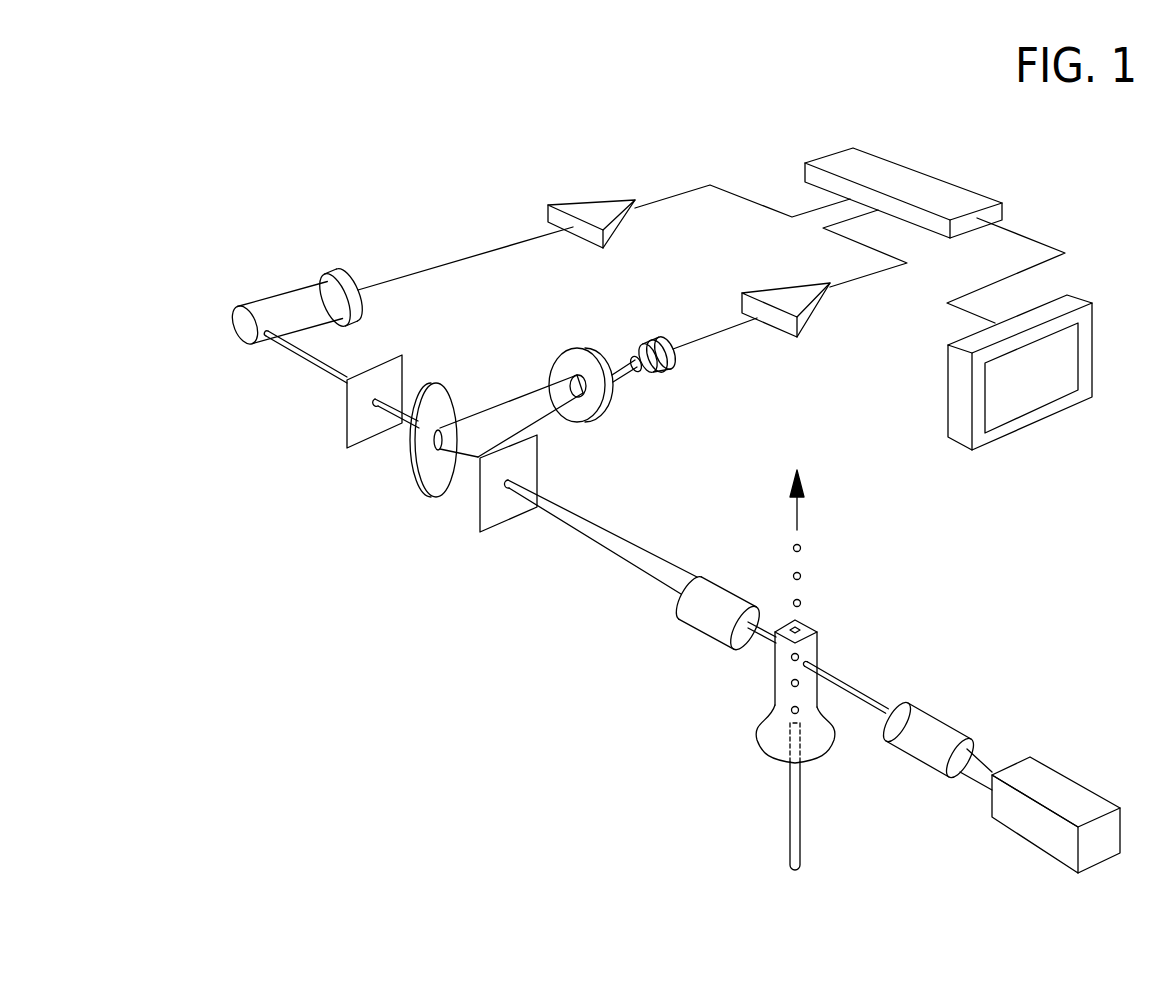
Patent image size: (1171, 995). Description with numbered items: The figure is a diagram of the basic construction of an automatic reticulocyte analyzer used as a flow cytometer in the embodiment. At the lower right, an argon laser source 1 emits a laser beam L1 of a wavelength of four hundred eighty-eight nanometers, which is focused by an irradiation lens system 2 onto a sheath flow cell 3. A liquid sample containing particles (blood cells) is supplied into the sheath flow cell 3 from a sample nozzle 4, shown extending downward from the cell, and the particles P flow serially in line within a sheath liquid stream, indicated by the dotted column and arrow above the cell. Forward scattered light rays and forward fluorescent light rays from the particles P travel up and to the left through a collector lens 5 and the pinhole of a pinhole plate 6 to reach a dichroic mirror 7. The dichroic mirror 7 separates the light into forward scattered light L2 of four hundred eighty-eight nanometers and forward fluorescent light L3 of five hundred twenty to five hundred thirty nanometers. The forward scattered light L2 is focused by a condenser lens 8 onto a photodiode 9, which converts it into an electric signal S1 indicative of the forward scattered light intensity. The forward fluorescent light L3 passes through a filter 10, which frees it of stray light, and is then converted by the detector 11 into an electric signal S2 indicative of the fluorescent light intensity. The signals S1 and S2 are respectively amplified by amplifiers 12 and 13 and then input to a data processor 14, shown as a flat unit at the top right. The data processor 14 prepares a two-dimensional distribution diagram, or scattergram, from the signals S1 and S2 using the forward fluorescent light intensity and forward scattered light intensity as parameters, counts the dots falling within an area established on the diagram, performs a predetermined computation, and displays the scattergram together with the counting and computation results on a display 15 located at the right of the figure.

The argon laser source 1 is at (1067, 777).
The irradiation lens system 2 is at (930, 720).
The sheath flow cell 3 is at (810, 643).
The sample nozzle 4 is at (800, 842).
The collector lens 5 is at (707, 617).
The pinhole plate 6 is at (500, 510).
The dichroic mirror 7 is at (433, 487).
The condenser lens 8 is at (612, 407).
The photodiode 9 is at (673, 370).
The filter 10 is at (355, 420).
The photodetector 11 is at (285, 300).
The amplifier 12 is at (810, 313).
The amplifier 13 is at (590, 210).
The data processor 14 is at (920, 182).
The display 15 is at (1072, 350).
The laser beam L1 is at (988, 763).
The forward scattered light L2 is at (500, 407).
The forward fluorescent light L3 is at (407, 420).
The electric signal S1 is at (690, 337).
The electric signal S2 is at (447, 263).
The particles (blood cells) P is at (802, 547).